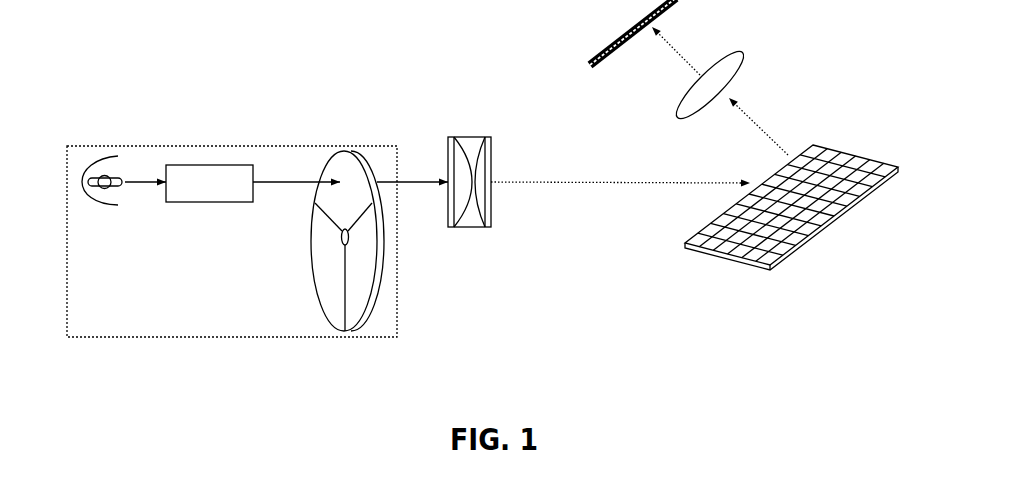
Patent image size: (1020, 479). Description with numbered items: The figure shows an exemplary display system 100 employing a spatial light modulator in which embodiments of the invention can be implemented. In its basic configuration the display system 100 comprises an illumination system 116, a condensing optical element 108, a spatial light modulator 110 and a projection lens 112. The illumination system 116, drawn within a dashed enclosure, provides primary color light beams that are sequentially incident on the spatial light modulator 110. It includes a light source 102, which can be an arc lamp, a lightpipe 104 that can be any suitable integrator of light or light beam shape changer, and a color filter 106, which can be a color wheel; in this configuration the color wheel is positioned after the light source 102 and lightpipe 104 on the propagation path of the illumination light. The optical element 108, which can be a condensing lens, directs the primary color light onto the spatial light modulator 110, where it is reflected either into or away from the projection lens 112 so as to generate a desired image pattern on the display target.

The display system 100 is at (355, 60).
The light source 102 is at (95, 152).
The lightpipe 104 is at (212, 163).
The color filter 106 is at (353, 150).
The optical element 108 is at (468, 132).
The spatial light modulator 110 is at (828, 142).
The projection lens 112 is at (737, 50).
The illumination system 116 is at (232, 337).